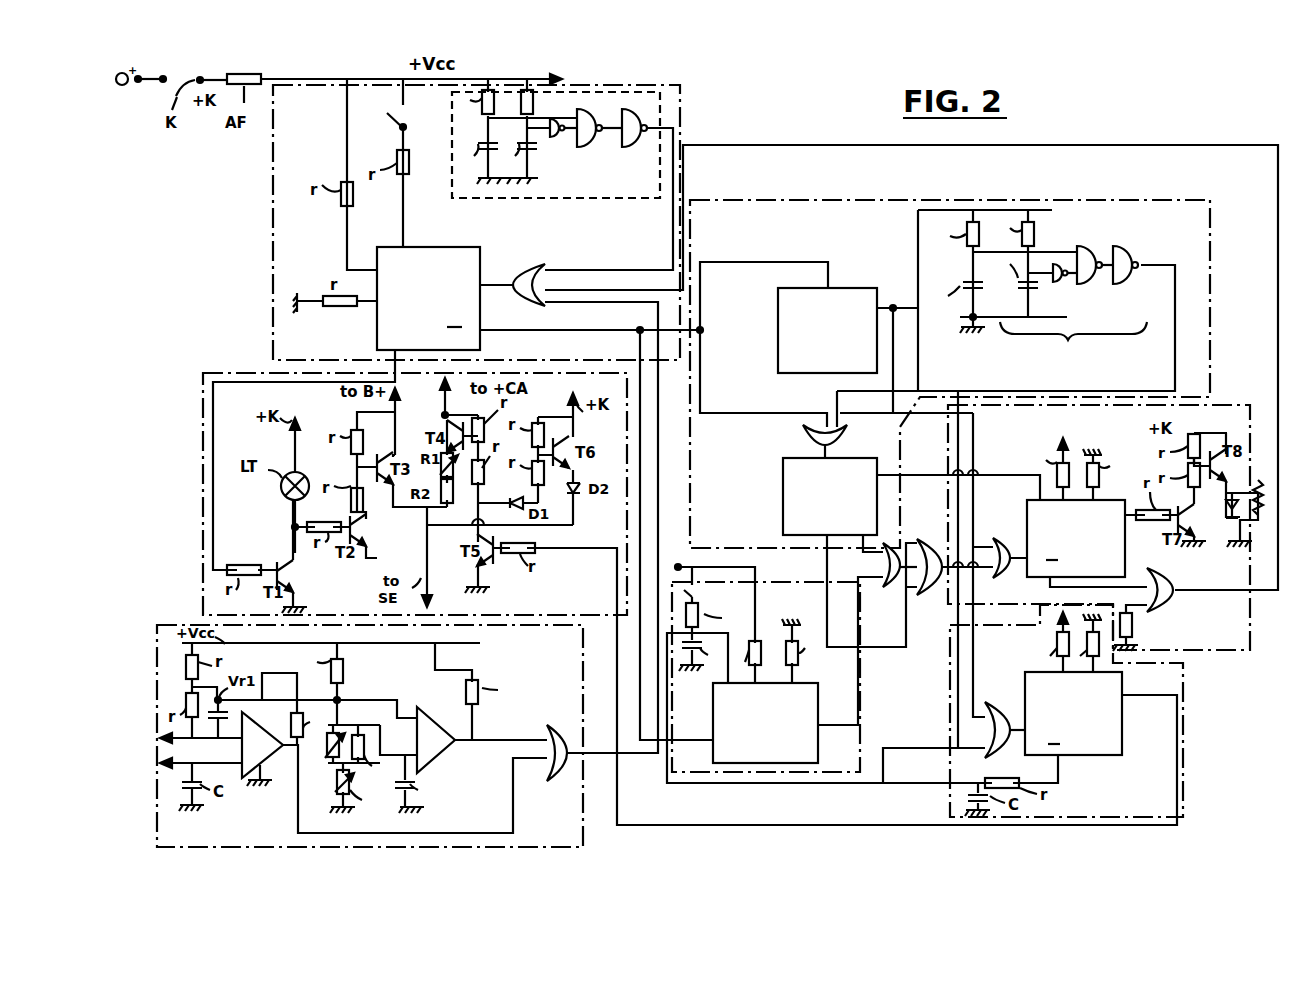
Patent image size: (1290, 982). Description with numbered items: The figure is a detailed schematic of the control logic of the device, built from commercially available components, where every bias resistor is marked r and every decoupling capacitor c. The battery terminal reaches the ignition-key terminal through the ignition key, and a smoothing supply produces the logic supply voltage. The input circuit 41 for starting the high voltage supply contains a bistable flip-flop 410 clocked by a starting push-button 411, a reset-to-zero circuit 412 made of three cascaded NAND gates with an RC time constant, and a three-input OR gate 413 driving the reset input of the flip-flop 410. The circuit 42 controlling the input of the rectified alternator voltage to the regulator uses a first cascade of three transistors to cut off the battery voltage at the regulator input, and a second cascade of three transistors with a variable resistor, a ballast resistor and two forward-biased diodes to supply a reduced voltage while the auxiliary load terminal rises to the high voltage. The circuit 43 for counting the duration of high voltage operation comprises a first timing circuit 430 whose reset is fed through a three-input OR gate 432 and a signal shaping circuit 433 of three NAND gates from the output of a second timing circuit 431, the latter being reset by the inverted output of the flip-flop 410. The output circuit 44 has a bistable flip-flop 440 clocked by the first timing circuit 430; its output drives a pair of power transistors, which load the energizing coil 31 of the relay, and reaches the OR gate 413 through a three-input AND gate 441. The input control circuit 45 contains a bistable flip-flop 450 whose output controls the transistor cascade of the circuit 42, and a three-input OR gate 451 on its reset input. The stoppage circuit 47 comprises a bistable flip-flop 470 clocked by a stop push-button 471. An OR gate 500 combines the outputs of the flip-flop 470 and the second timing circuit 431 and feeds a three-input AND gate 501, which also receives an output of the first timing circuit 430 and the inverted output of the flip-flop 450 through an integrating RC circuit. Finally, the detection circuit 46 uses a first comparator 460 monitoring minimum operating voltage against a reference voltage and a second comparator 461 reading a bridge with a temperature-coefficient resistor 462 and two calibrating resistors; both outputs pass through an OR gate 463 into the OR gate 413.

The energizing coil 31 is at (1246, 490).
The input circuit for controlling the starting of the high voltage supply 41 is at (295, 262).
The bistable flip-flop 410 is at (377, 325).
The starting push-button 411 is at (396, 128).
The reset-to-zero circuit 412 is at (606, 184).
The three-input OR gate 413 is at (526, 268).
The circuit for controlling the input of the rectified alternator voltage to the reg 42 is at (200, 510).
The circuit for counting a predetermined duration of maintaining the high voltage op 43 is at (760, 210).
The first timing circuit 430 is at (783, 503).
The second timing circuit 431 is at (862, 290).
The three-input OR gate 432 is at (803, 430).
The signal shaping circuit 433 is at (1046, 300).
The output circuit for controlling the parallel-series/series-parallel switching mea 44 is at (1213, 632).
The bistable flip-flop 440 is at (1027, 522).
The three-input AND gate 441 is at (1168, 582).
The input control circuit of the rectified alternator voltage to the regulator 45 is at (1190, 718).
The bistable flip-flop 450 is at (1112, 748).
The three-input OR gate 451 is at (996, 712).
The circuit for detecting temperature and engine speed conditions 46 is at (565, 662).
The first comparator 460 is at (280, 785).
The second comparator 461 is at (458, 742).
The resistor having a temperature coefficient 462 is at (328, 772).
The OR gate 463 is at (548, 726).
The input circuit for controlling the stoppage of the high voltage power supply 47 is at (862, 696).
The bistable flip-flop 470 is at (818, 700).
The stop push-button 471 is at (698, 596).
The OR gate 500 is at (895, 596).
The three-input AND gate 501 is at (930, 598).